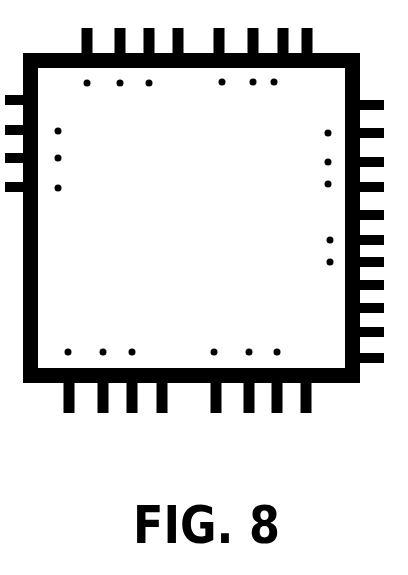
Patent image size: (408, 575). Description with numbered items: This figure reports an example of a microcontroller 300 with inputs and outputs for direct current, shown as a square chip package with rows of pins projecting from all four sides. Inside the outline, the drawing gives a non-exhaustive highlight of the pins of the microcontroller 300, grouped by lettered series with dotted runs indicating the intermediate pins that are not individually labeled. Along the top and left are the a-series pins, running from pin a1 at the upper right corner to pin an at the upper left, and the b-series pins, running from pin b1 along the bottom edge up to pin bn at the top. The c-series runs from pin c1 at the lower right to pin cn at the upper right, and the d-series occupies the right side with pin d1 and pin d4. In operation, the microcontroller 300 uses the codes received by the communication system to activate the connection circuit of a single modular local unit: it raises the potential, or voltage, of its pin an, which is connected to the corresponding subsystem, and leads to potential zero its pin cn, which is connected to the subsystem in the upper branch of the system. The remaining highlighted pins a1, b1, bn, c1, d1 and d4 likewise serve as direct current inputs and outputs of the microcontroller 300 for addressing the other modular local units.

The microcontroller 300 is at (194, 220).
The Pin an is at (99, 136).
The Pin bn is at (179, 87).
The Pin cn is at (265, 81).
The Pin a1 is at (321, 136).
The Pin b1 is at (118, 348).
The Pin c1 is at (264, 349).
The Pin d1 is at (322, 233).
The Pin d4 is at (322, 284).